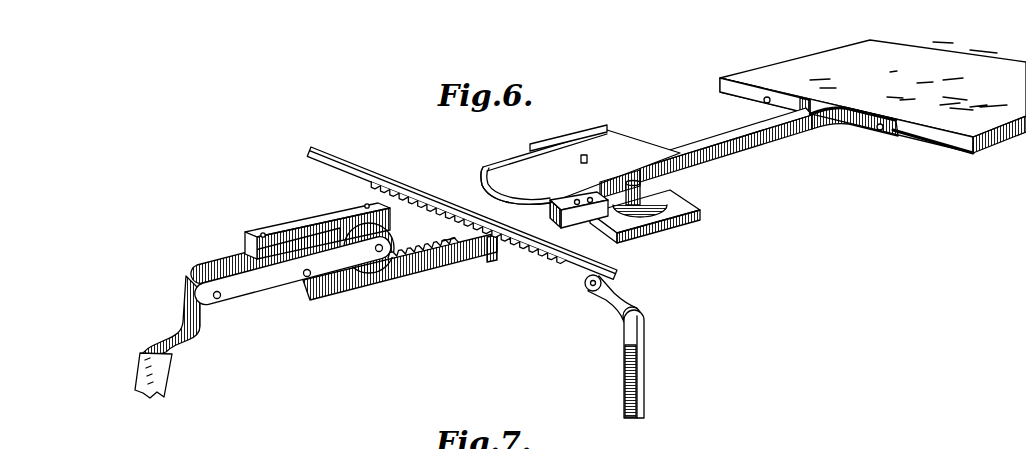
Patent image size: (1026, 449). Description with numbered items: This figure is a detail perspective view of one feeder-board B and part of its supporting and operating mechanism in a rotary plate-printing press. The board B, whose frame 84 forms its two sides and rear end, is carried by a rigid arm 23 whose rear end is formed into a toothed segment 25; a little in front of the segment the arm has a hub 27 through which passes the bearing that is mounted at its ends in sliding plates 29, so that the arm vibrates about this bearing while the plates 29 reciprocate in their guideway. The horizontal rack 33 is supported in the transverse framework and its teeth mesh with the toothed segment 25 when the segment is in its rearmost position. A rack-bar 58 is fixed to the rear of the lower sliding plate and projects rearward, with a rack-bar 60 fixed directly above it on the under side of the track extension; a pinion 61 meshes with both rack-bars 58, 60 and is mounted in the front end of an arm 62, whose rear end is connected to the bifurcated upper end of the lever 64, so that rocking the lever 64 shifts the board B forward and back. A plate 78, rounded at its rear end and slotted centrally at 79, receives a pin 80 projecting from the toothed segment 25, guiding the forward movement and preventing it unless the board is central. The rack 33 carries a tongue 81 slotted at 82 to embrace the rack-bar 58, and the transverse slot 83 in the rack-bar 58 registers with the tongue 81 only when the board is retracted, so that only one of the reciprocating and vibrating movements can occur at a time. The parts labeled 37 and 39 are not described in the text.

The rigid arm 23 is at (763, 142).
The toothed segment 25 is at (662, 222).
The hub 27 is at (626, 233).
The sliding plate 29 is at (655, 135).
The horizontal rack 33 is at (377, 165).
The hanging bar 37 is at (644, 353).
The link 39 is at (610, 306).
The rack-bar 58 is at (430, 259).
The rack-bar 60 is at (285, 231).
The pinion 61 is at (386, 239).
The arm 62 is at (229, 263).
The lever 64 is at (142, 358).
The plate 78 is at (513, 168).
The slot 79 is at (484, 170).
The pin 80 is at (585, 156).
The tongue 81 is at (490, 255).
The slot 82 is at (447, 241).
The transverse slot 83 is at (560, 213).
The frame 84 is at (743, 90).
The feeder-board B is at (873, 96).